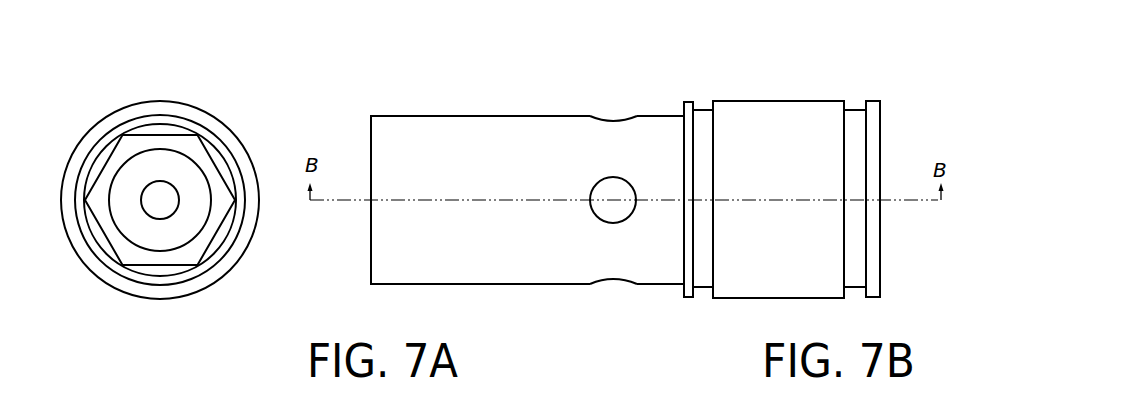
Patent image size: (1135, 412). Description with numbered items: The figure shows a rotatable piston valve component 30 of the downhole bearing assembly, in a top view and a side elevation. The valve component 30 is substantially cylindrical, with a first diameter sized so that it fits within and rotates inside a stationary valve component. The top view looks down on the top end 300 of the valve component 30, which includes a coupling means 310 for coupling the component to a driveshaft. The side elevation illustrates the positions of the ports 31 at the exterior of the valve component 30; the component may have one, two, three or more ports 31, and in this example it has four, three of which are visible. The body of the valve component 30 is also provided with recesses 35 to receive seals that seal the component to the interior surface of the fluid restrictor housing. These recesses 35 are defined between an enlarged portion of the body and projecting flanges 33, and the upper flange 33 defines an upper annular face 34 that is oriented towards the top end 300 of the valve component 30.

In FIG. 7A, the top end 300 is at (162, 298).
In FIG. 7B, the top end 300 is at (371, 130).
In FIG. 7A, the coupling means 310 is at (212, 240).
In FIG. 7B, the ports 31 is at (610, 117).
In FIG. 7B, the projecting flanges 33 is at (687, 102).
In FIG. 7B, the recesses 35 is at (860, 110).
In FIG. 7B, the valve component 30 is at (768, 287).
In FIG. 7B, the upper annular face 34 is at (682, 296).